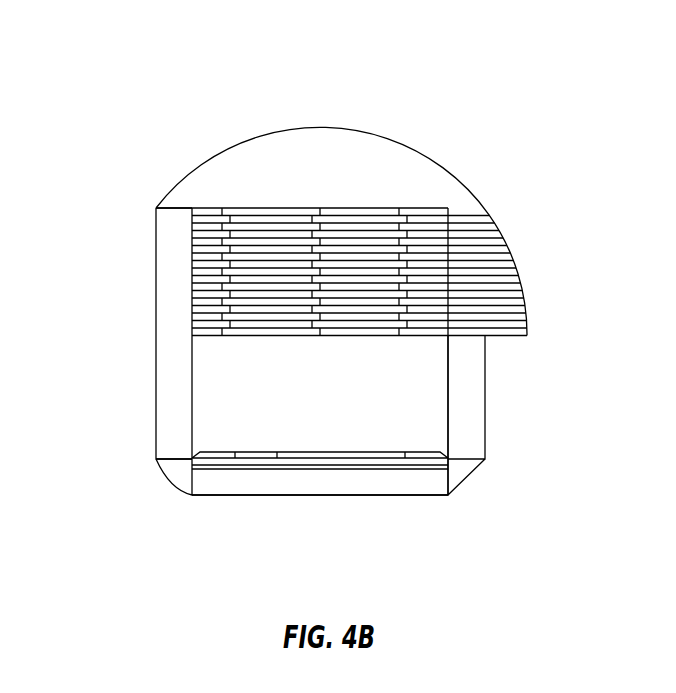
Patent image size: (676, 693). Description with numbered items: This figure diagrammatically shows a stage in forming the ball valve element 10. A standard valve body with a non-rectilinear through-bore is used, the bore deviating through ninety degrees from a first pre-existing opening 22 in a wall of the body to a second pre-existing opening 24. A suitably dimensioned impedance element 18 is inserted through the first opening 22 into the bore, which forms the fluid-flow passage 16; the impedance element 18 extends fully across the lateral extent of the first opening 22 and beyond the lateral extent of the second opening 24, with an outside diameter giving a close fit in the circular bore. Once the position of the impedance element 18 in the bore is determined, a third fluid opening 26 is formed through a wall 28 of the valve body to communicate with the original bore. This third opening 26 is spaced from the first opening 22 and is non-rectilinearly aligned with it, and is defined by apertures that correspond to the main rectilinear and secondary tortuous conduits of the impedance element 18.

The ball valve element 10 is at (116, 72).
The fluid-flow passage 16 is at (170, 437).
The impedance element 18 is at (430, 213).
The first opening 22 is at (400, 497).
The second opening 24 is at (170, 260).
The third fluid opening 26 is at (519, 280).
The wall 28 is at (473, 442).